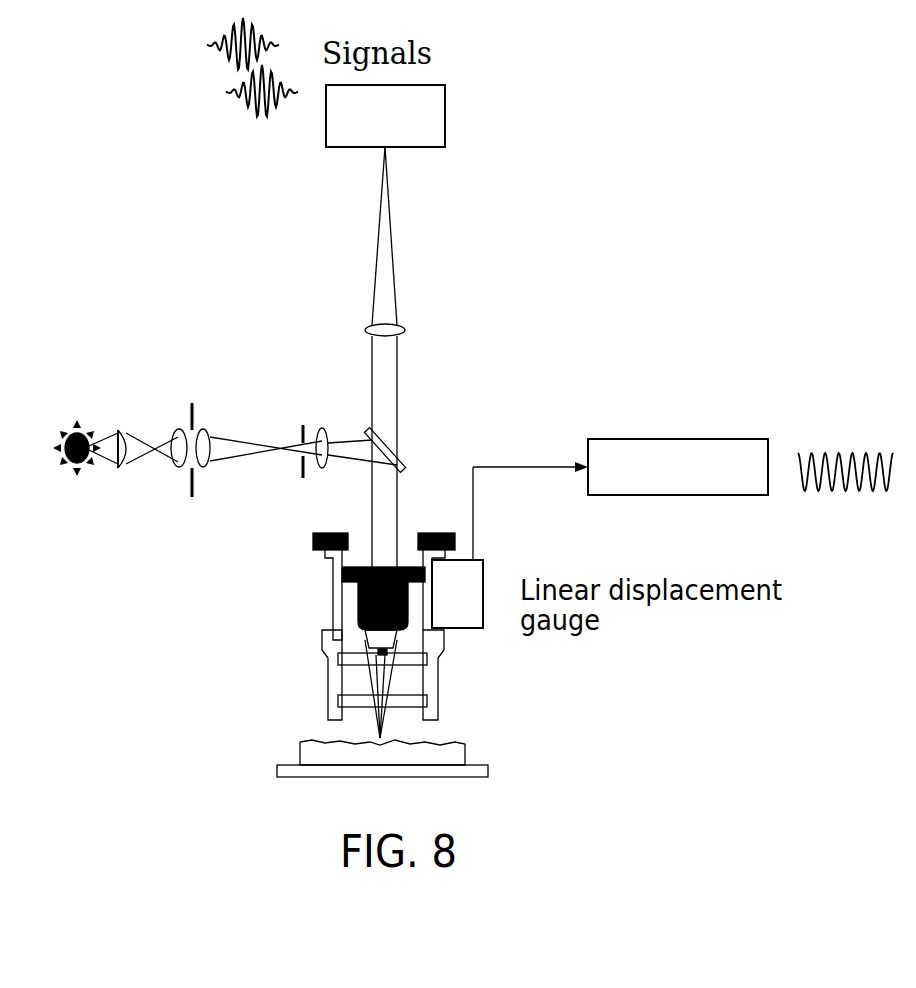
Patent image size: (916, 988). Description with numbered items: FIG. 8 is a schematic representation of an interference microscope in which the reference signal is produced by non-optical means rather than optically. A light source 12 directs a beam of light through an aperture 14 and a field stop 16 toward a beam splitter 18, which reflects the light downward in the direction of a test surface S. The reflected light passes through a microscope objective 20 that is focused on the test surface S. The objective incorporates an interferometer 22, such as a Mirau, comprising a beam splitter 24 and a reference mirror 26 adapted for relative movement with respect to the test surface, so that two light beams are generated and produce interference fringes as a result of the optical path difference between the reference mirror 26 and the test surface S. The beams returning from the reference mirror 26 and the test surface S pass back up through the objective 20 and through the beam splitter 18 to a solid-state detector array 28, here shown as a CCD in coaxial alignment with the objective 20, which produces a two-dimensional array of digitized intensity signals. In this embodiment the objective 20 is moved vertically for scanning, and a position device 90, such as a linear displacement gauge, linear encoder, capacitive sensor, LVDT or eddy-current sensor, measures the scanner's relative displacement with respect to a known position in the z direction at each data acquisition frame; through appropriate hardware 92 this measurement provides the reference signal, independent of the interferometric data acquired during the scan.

The light source 12 is at (77, 424).
The aperture 14 is at (191, 412).
The field stop 16 is at (302, 427).
The beam splitter 18 is at (401, 457).
The microscope objective 20 is at (358, 597).
The interferometer 22 is at (443, 648).
The beam splitter 24 is at (413, 700).
The reference mirror 26 is at (352, 666).
The solid-state detector array 28 is at (447, 115).
The position device 90 is at (485, 577).
The hardware 92 is at (683, 439).
The test surface S is at (455, 745).